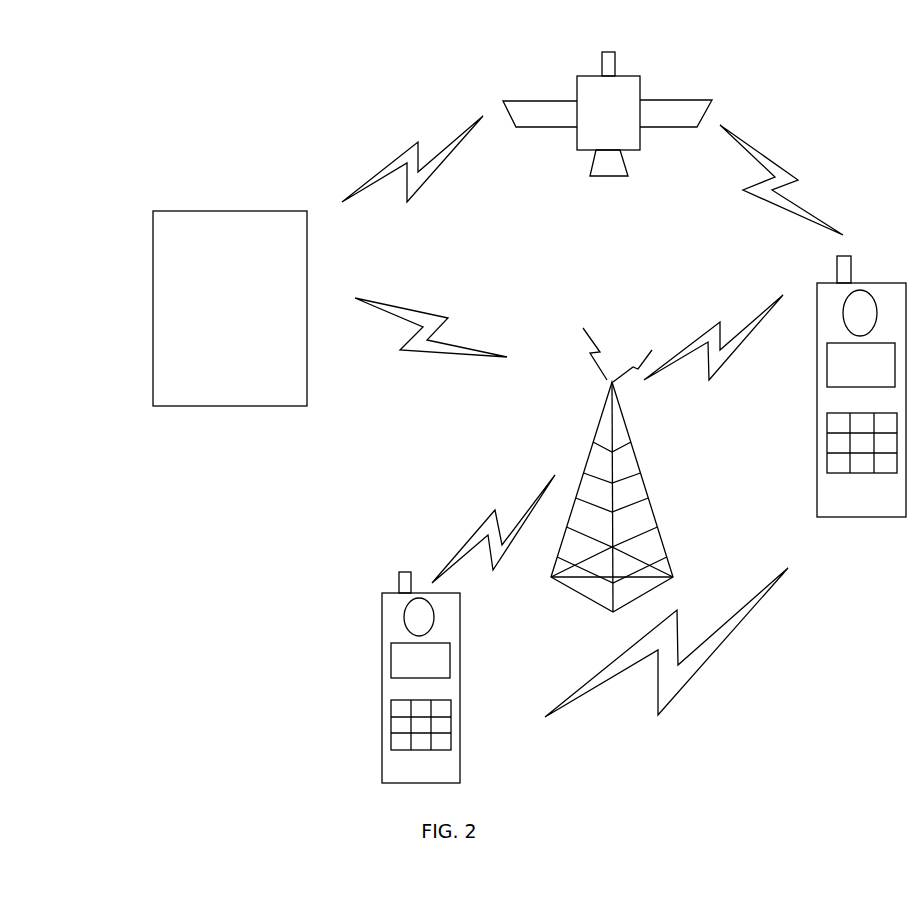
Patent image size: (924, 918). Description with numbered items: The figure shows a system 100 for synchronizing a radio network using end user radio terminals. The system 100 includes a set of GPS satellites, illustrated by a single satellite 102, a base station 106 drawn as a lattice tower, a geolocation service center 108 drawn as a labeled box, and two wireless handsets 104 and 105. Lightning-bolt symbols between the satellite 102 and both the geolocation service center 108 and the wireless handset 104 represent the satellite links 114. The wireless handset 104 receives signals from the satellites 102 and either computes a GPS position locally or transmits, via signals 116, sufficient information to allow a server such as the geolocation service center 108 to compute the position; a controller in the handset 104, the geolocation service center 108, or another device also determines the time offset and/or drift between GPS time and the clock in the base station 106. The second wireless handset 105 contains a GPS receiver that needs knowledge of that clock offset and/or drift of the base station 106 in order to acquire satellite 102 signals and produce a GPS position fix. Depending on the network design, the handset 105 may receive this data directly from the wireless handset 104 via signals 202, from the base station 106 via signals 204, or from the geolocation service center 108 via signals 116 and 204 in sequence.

The system 100 is at (193, 93).
The GPS satellites 102 is at (623, 124).
The wireless handset 104 is at (852, 503).
The wireless handset 105 is at (434, 776).
The base station 106 is at (641, 474).
The geolocation service center 108 is at (215, 357).
The satellite communication link 114 is at (398, 153).
The signals 116 is at (415, 308).
The signals 202 is at (703, 667).
The signals 204 is at (482, 517).